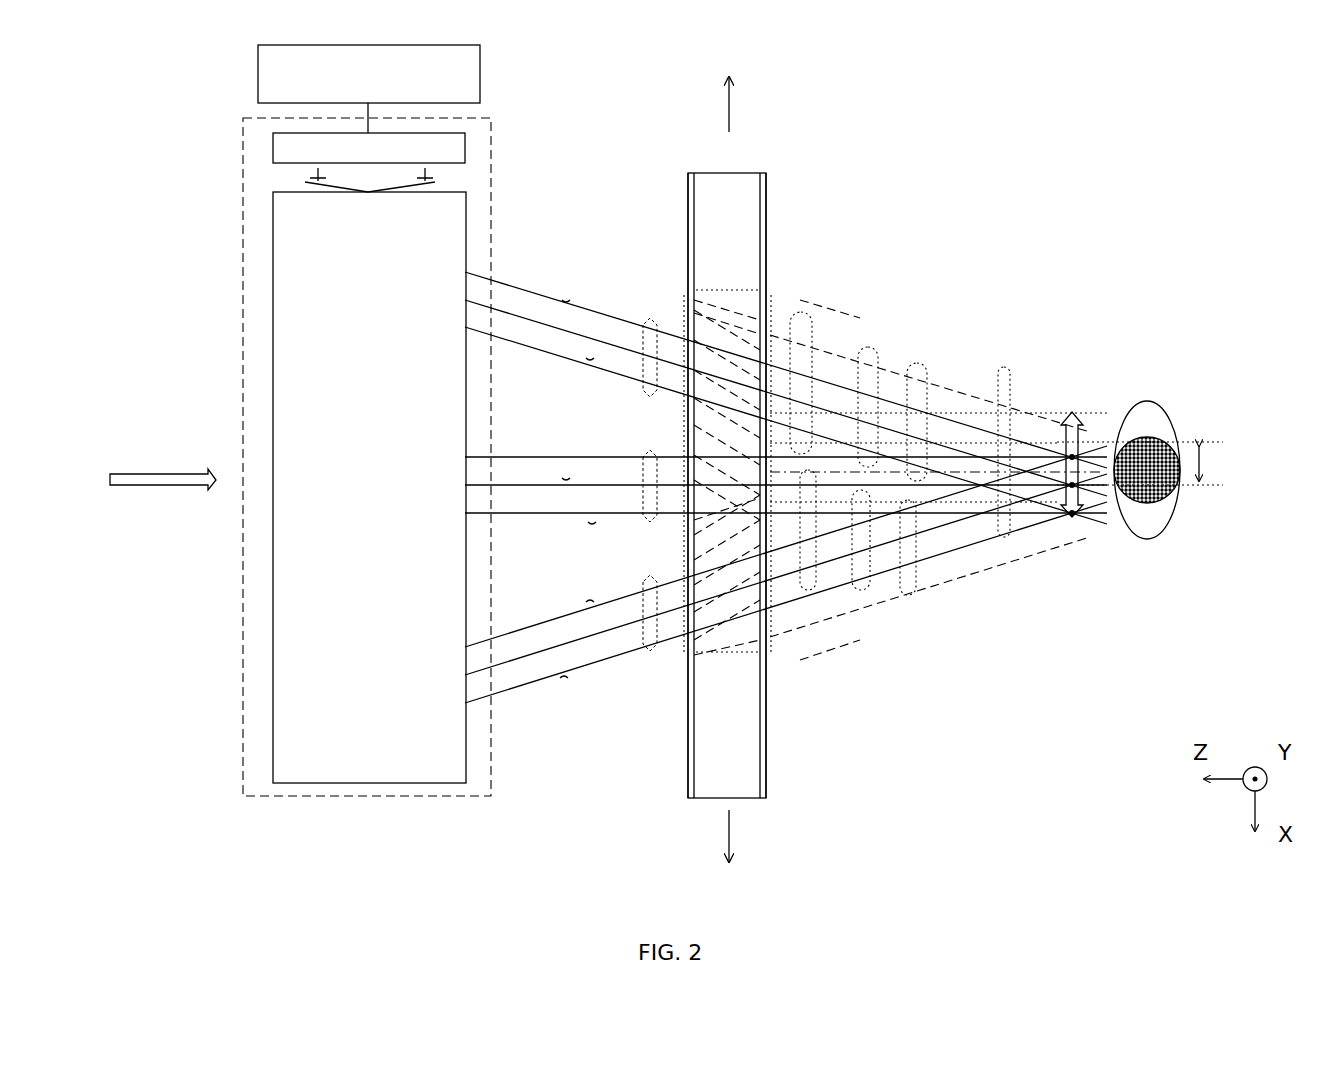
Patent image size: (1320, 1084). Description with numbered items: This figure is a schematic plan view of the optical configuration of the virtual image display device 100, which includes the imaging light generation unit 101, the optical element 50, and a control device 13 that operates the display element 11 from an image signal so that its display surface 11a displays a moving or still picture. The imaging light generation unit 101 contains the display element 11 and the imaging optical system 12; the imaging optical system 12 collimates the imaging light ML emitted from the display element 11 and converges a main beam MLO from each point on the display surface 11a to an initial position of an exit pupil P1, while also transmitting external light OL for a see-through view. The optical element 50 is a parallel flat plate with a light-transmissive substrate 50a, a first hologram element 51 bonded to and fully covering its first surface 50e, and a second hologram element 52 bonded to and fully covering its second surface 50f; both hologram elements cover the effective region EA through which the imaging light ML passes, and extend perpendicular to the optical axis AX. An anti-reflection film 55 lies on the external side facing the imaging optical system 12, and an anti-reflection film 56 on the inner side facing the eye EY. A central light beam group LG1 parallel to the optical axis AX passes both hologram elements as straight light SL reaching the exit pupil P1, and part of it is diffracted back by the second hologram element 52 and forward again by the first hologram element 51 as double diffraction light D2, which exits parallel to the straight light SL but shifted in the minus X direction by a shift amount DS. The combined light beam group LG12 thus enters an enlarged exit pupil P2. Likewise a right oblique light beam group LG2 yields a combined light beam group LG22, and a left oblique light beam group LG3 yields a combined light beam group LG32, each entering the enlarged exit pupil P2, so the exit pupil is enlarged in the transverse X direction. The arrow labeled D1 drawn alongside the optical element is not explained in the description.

The virtual image display device 100 is at (879, 126).
The control device 13 is at (480, 82).
The imaging light generation unit 101 is at (348, 797).
The display element 11 is at (273, 144).
The display surface 11a is at (310, 178).
The imaging optical system 12 is at (415, 783).
The optical element 50 is at (727, 176).
The substrate 50a is at (712, 192).
The first surface 50e is at (688, 238).
The second surface 50f is at (768, 238).
The first hologram element 51 is at (688, 222).
The second hologram element 52 is at (767, 222).
The anti-reflection film 55 is at (688, 736).
The anti-reflection film 56 is at (767, 736).
The external light OL is at (160, 488).
The main beam MLO is at (518, 312).
The imaging light ML is at (432, 178).
The central light beam group LG1 is at (650, 452).
The light beam group LG2 is at (650, 320).
The light beam group LG3 is at (648, 652).
The light beam group LG22 is at (920, 360).
The light beam group LG12 is at (925, 578).
The light beam group LG32 is at (880, 592).
The straight light SL is at (775, 350).
The first direction D1 is at (726, 102).
The double diffraction light D2 is at (740, 830).
The optical axis AX is at (802, 540).
The effective region EA is at (727, 655).
The exit pupil P1 is at (1075, 520).
The exit pupil P2 is at (1079, 428).
The eye EY is at (1147, 402).
The shift amount DS is at (1149, 463).